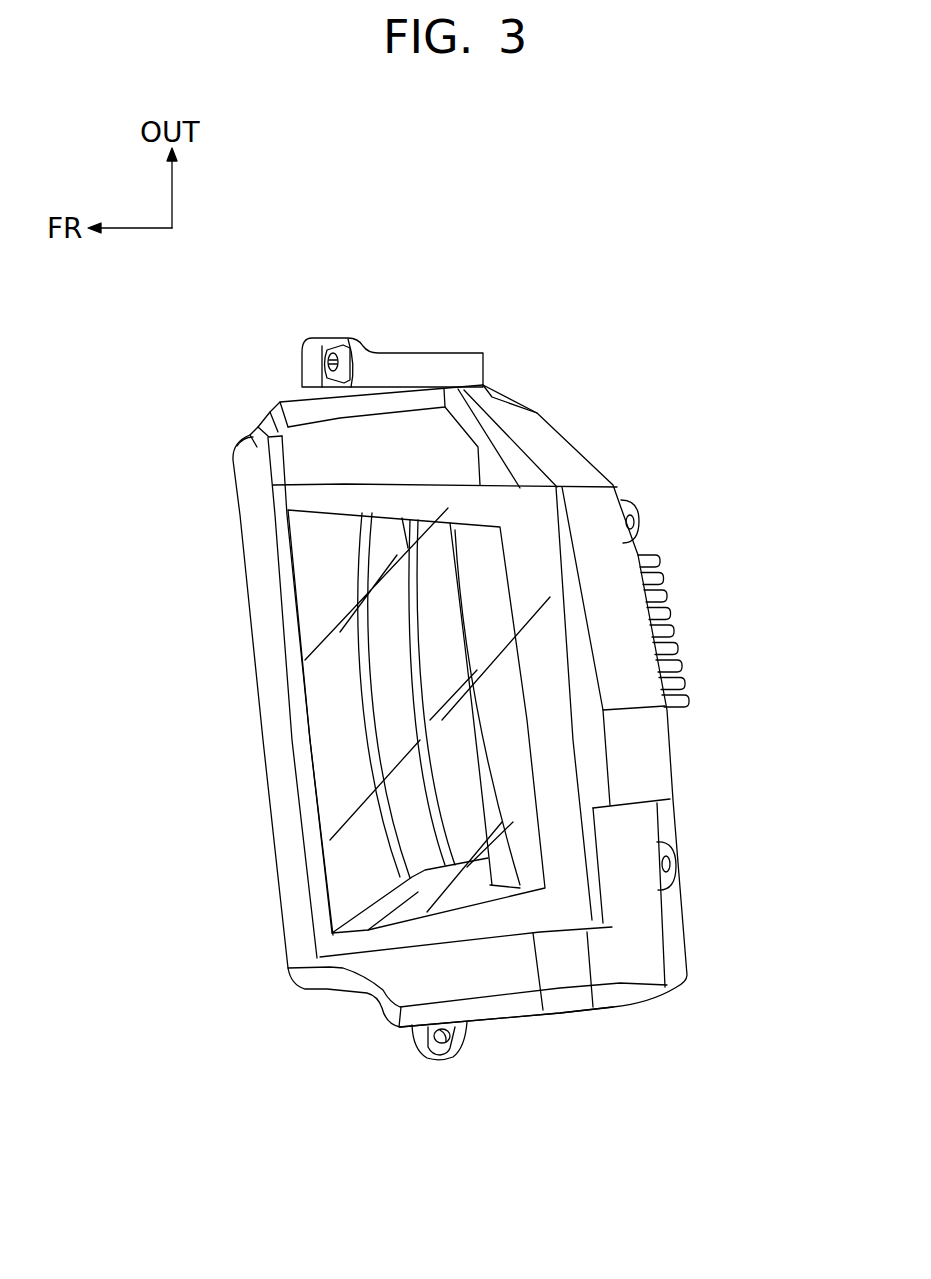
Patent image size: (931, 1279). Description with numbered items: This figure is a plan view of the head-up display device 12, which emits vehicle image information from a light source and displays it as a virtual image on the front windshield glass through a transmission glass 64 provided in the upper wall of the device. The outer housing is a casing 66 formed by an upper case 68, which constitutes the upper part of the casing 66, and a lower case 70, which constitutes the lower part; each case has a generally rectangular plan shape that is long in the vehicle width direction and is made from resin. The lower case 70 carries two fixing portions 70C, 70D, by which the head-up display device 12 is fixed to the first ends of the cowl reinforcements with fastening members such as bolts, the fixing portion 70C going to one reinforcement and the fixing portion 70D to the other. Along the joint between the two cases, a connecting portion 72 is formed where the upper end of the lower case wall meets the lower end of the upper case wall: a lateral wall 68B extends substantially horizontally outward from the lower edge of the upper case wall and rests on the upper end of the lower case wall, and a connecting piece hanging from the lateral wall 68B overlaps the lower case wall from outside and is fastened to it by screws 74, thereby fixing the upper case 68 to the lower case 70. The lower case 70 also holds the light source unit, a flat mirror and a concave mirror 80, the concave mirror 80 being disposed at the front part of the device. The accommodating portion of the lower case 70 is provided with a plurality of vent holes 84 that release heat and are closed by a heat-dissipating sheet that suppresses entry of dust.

The head-up display device 12 is at (690, 413).
The transmission glass 64 is at (327, 690).
The casing 66 is at (613, 462).
The upper case 68 is at (537, 423).
The lateral wall 68B is at (633, 752).
The lower case 70 is at (676, 820).
The fixing portion 70C is at (420, 1045).
The fixing portion 70D is at (350, 367).
The connecting portion 72 is at (623, 502).
The screws 74 is at (638, 523).
The concave mirror 80 is at (342, 737).
The vent holes 84 is at (675, 675).